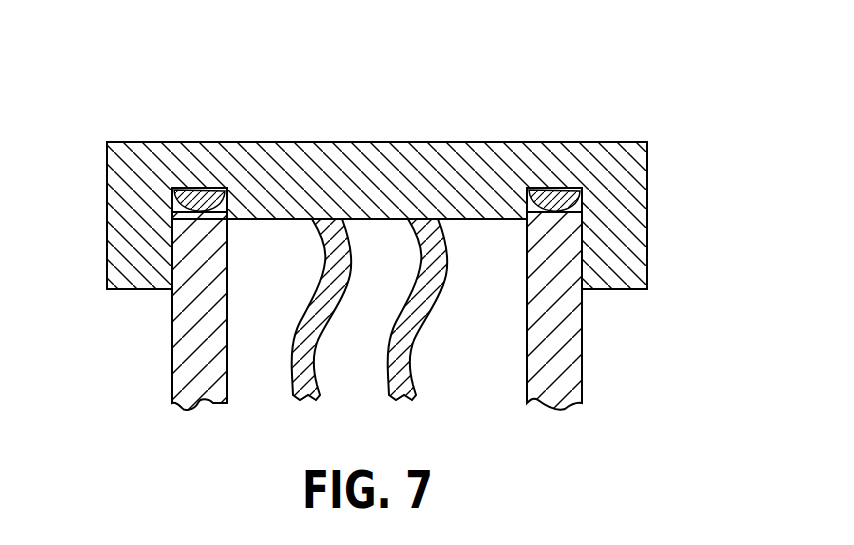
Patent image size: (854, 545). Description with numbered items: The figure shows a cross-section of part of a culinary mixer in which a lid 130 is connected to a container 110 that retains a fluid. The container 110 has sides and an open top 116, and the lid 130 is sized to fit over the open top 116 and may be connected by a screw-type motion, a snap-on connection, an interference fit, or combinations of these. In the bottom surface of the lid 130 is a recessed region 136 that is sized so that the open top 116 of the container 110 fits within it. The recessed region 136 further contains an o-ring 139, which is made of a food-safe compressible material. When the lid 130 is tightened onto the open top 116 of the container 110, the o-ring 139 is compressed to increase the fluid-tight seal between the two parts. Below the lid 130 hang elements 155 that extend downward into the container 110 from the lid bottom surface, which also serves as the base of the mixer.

The lid 130 is at (634, 193).
The container 110 is at (573, 355).
The o-ring 139 is at (211, 213).
The recessed region 136 is at (197, 188).
The open top 116 is at (217, 205).
The flexible members 155 is at (390, 337).